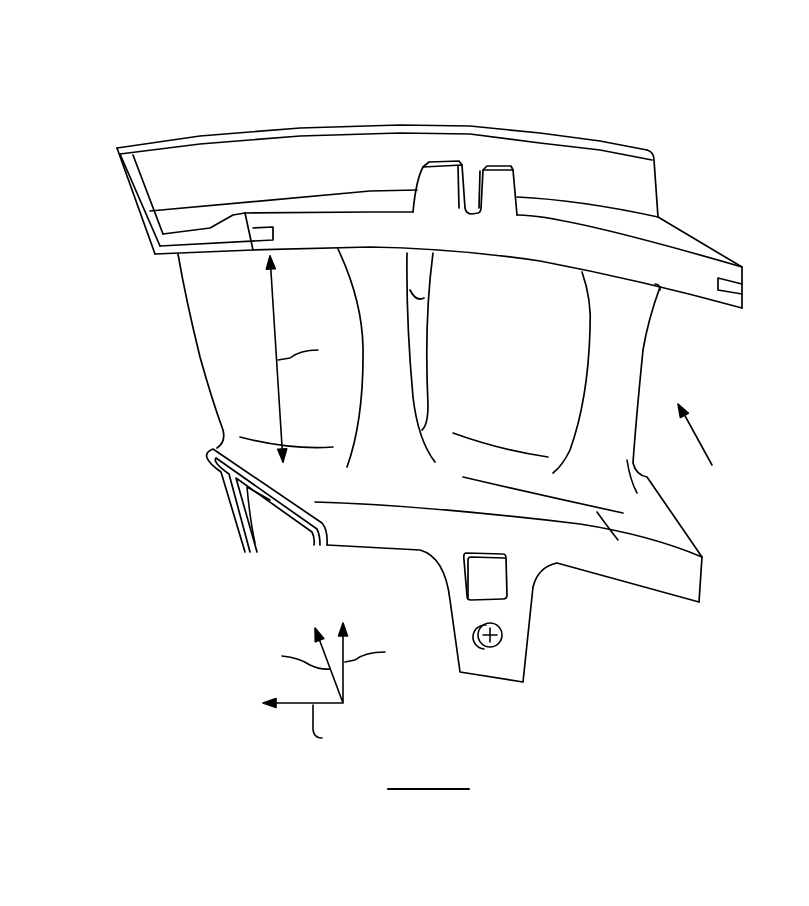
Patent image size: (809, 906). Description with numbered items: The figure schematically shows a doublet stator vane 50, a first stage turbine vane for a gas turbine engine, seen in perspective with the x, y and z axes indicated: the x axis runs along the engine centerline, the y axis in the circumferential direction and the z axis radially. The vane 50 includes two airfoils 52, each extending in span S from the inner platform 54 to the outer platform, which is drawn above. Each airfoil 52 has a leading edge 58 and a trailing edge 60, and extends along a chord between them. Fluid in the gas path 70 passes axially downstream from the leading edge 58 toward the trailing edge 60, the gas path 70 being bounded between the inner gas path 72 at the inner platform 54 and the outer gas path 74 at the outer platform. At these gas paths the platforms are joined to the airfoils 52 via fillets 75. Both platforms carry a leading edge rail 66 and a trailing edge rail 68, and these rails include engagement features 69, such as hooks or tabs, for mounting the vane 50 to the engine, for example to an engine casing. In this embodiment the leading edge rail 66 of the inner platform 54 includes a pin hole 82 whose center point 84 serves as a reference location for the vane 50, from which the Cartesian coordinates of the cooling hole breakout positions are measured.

The doublet stator vane 50 is at (443, 92).
The airfoil 52 is at (200, 294).
The inner platform 54 is at (250, 535).
The leading edge 58 is at (400, 420).
The trailing edge 60 is at (198, 352).
The leading edge rail 66 is at (643, 257).
The trailing edge rail 68 is at (133, 180).
The engagement feature 69 is at (495, 188).
The gas path 70 is at (705, 440).
The inner gas path 72 is at (656, 476).
The outer gas path 74 is at (670, 299).
The fillet 75 is at (597, 512).
The pin hole 82 is at (478, 647).
The center point 84 is at (494, 640).